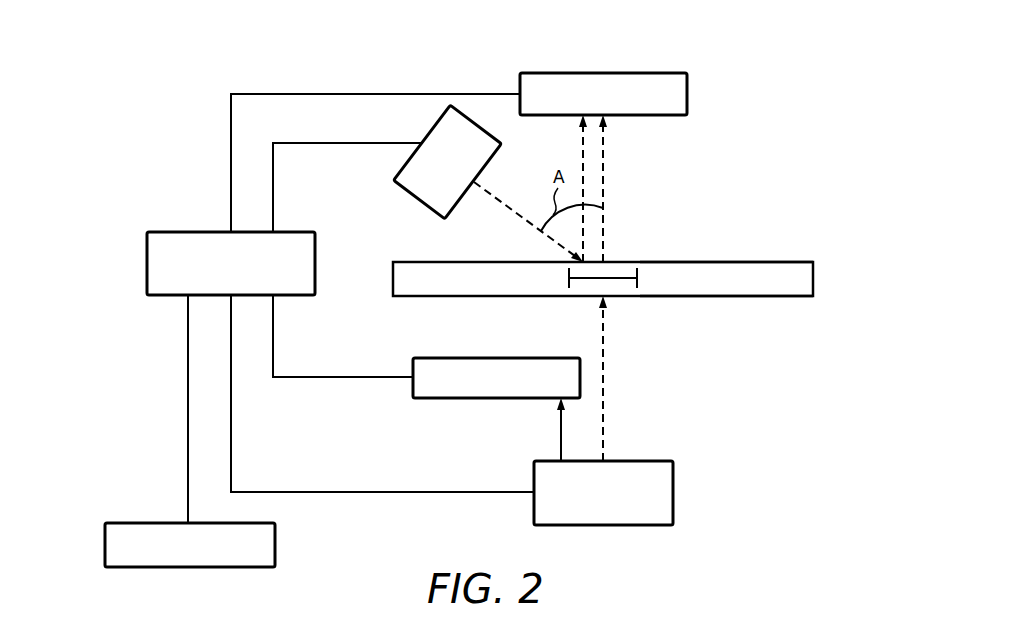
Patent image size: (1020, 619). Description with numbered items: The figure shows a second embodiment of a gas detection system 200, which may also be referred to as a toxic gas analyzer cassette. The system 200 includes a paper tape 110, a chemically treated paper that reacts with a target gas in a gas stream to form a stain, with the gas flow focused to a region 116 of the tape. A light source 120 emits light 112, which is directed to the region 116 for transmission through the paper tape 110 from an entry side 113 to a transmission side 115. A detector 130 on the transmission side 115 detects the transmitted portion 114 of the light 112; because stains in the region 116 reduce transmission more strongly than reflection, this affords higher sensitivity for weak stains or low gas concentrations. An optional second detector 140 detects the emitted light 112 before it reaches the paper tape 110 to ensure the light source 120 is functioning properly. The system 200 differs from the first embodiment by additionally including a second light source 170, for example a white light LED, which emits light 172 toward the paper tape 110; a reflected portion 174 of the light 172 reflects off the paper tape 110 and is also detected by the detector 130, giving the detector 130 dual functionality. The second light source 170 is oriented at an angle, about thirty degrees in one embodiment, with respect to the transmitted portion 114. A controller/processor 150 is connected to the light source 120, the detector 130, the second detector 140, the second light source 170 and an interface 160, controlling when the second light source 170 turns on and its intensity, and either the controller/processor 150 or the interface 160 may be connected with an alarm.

The gas detection system 200 is at (762, 20).
The paper tape 110 is at (767, 262).
The light 112 is at (604, 374).
The entry side 113 is at (728, 296).
The transmitted portion of light 114 is at (604, 162).
The transmission side 115 is at (678, 262).
The region of the paper tape 116 is at (615, 280).
The light source 120 is at (674, 491).
The detector 130 is at (688, 94).
The second detector 140 is at (507, 358).
The controller/processor 150 is at (146, 261).
The interface 160 is at (104, 545).
The second light source 170 is at (415, 198).
The light 172 is at (522, 217).
The reflected portion of light 174 is at (581, 147).